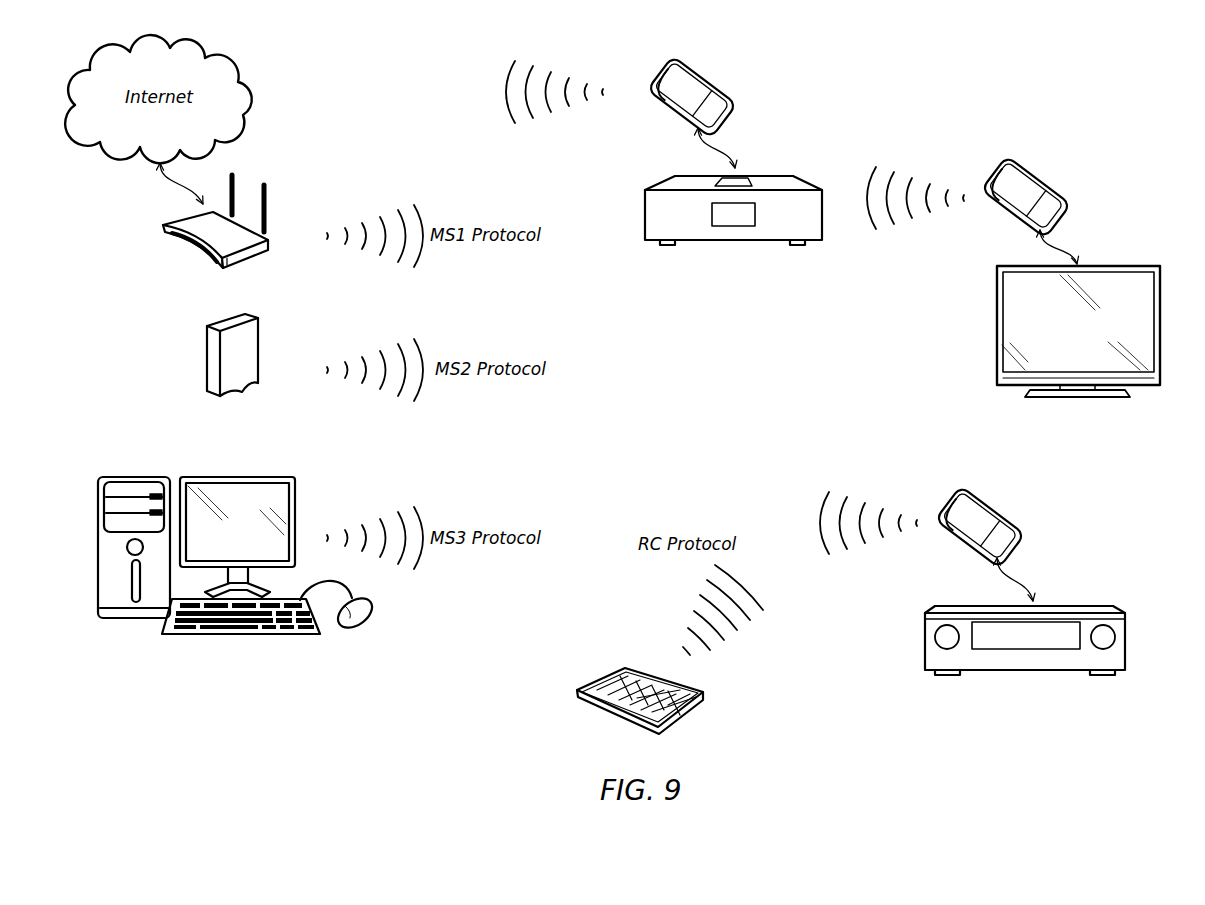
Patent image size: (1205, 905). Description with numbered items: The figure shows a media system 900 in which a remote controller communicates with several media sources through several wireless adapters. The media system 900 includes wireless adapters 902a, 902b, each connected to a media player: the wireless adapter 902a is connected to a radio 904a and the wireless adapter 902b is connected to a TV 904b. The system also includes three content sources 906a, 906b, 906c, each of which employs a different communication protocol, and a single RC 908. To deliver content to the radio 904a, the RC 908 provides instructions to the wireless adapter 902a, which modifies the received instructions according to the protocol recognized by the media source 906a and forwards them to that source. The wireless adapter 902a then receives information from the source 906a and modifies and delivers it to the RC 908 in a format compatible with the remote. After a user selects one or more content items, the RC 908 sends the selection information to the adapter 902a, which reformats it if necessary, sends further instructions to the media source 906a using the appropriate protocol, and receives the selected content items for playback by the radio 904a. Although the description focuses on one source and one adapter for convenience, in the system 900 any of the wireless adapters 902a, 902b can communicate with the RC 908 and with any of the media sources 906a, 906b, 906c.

The media system 900 is at (1026, 60).
The wireless adapter 902a is at (724, 103).
The wireless adapter 902b is at (1060, 208).
The radio 904a is at (779, 176).
The TV 904b is at (1117, 267).
The content source 906a is at (162, 230).
The content source 906b is at (207, 360).
The content source 906c is at (135, 478).
The RC 908 is at (703, 699).